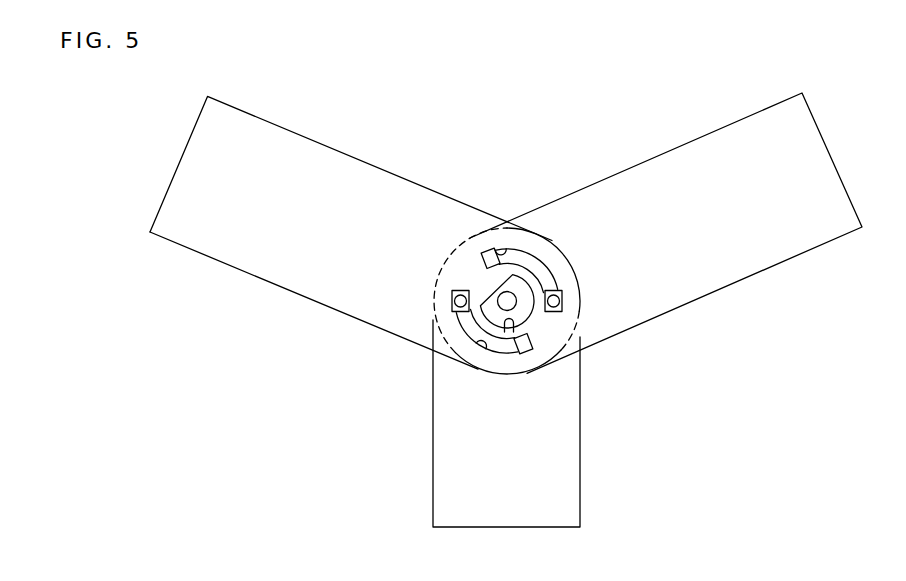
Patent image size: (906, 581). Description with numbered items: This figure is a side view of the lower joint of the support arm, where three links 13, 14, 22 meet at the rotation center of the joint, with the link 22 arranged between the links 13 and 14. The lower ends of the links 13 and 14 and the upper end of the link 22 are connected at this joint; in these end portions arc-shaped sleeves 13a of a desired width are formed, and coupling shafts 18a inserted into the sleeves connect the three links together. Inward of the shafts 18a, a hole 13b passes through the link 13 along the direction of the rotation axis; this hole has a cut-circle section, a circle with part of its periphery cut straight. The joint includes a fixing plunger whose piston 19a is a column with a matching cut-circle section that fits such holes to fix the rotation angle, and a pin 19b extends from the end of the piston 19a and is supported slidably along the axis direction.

The link 13 is at (262, 279).
The link 14 is at (668, 151).
The link 22 is at (582, 490).
The sleeve 13a is at (492, 253).
The hole 13b is at (513, 332).
The coupling shaft 18a is at (451, 300).
The piston 19a is at (523, 312).
The pin 19b is at (503, 298).